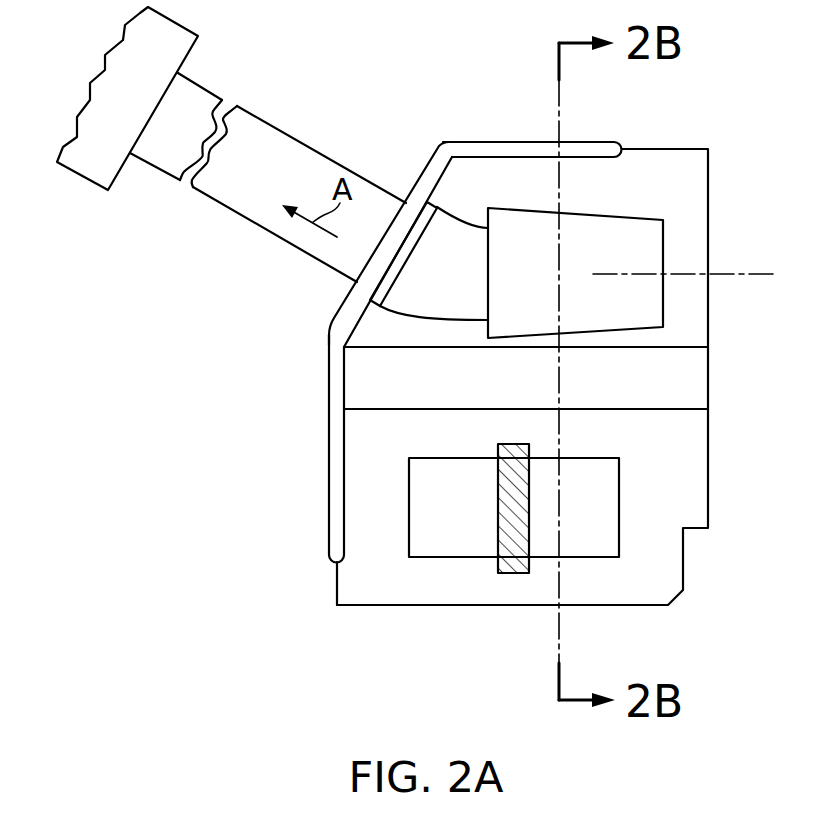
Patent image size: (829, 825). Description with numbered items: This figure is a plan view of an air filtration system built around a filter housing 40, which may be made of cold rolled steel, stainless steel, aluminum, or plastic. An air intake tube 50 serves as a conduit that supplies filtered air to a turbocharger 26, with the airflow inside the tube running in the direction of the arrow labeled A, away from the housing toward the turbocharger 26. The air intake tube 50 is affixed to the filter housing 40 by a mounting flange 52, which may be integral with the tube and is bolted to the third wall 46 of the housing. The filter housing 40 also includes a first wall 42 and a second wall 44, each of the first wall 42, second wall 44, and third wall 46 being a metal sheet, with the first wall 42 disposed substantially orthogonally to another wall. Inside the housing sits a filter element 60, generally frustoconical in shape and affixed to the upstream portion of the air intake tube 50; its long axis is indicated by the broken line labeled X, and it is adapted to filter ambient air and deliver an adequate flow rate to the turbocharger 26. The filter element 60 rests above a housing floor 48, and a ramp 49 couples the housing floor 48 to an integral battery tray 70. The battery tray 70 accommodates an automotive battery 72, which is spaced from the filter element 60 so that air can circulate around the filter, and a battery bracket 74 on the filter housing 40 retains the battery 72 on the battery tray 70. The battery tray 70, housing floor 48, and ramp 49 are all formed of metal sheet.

The turbocharger 26 is at (80, 176).
The filter housing 40 is at (448, 108).
The first wall 42 is at (328, 477).
The second wall 44 is at (513, 142).
The third wall 46 is at (426, 170).
The housing floor 48 is at (683, 202).
The ramp 49 is at (687, 395).
The air intake tube 50 is at (230, 207).
The mounting flange 52 is at (379, 303).
The filter element 60 is at (540, 291).
The battery tray 70 is at (686, 469).
The battery 72 is at (474, 523).
The battery bracket 74 is at (497, 568).